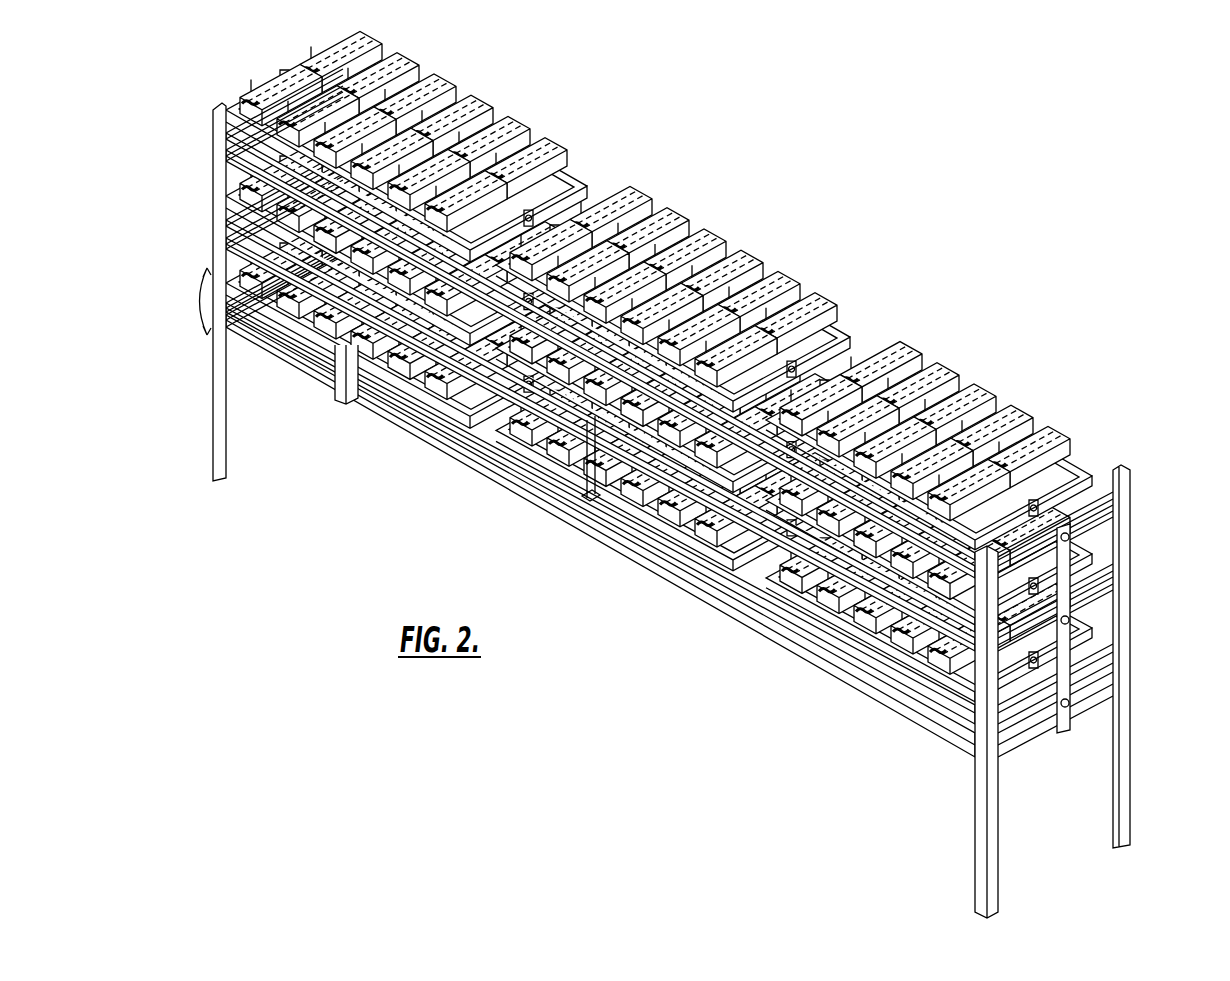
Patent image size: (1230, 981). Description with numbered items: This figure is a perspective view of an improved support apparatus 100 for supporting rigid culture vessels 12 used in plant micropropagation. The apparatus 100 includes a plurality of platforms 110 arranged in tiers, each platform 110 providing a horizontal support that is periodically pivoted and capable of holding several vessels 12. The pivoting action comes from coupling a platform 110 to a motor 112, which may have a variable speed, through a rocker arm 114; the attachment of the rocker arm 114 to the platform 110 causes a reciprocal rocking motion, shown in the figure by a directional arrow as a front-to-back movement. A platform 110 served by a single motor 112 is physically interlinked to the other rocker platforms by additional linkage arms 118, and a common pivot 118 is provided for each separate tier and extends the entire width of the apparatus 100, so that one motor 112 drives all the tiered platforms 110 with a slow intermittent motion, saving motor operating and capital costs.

The support apparatus 100 is at (1031, 370).
The rigid vessel 12 is at (1087, 464).
The platform 110 is at (695, 558).
The motor 112 is at (590, 487).
The rocker arm 114 is at (596, 500).
The linkage arm 118 is at (652, 336).